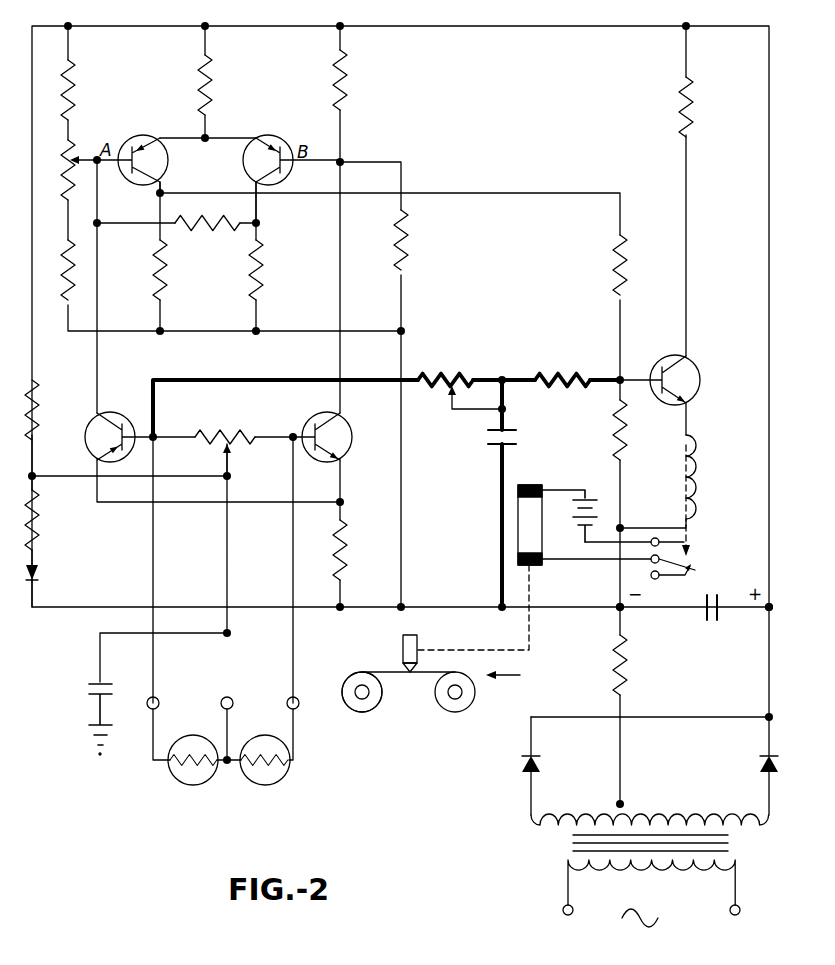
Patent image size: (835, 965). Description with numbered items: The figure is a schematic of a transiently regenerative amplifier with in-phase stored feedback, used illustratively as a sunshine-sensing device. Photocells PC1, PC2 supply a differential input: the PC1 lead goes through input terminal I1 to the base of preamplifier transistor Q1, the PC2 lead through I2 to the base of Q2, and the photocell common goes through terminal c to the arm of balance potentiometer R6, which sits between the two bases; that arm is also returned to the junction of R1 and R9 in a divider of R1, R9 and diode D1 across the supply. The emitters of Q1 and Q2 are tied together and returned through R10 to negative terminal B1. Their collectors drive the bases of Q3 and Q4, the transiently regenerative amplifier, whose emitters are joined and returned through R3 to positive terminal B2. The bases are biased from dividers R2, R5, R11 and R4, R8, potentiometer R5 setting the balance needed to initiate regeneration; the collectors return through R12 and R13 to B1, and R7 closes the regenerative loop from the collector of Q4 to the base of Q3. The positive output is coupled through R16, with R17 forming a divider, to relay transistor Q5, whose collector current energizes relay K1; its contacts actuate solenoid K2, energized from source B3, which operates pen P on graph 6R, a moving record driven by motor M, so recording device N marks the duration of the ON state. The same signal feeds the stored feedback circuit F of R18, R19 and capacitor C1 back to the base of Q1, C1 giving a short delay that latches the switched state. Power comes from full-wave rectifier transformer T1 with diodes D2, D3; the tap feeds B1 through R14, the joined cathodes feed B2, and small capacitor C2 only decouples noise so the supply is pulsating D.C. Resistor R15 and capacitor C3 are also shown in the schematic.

The serial resistance R1 is at (38, 426).
The divider resistor R2 is at (76, 64).
The emitter resistor R3 is at (212, 60).
The divider resistor R4 is at (346, 58).
The potentiometer R5 is at (70, 142).
The balance potentiometer R6 is at (224, 434).
The regenerative loop resistor R7 is at (198, 226).
The divider resistor R8 is at (408, 222).
The serial resistance R9 is at (38, 524).
The emitter resistor R10 is at (347, 528).
The divider resistor R11 is at (66, 304).
The collector resistor R12 is at (167, 290).
The collector resistor R13 is at (263, 250).
The resistor R14 is at (628, 644).
The resistor R15 is at (680, 80).
The coupling resistor R16 is at (614, 244).
The divider resistor R17 is at (602, 429).
The feedback resistor R18 is at (582, 372).
The feedback resistor R19 is at (460, 374).
The preamplifier transistor Q1 is at (119, 427).
The preamplifier transistor Q2 is at (333, 432).
The regenerative amplifier transistor Q3 is at (146, 164).
The regenerative amplifier transistor Q4 is at (277, 179).
The relay transistor Q5 is at (670, 392).
The capacitor C1 is at (488, 434).
The capacitor C2 is at (708, 614).
The capacitor C3 is at (90, 687).
The diode D1 is at (40, 582).
The diode D2 is at (522, 768).
The diode D3 is at (758, 764).
The relay K1 is at (700, 444).
The solenoid K2 is at (536, 484).
The negative terminal B1 is at (602, 594).
The positive terminal B2 is at (782, 593).
The source B3 is at (600, 496).
The input terminal I1 is at (159, 698).
The input terminal I2 is at (299, 698).
The input terminal c is at (233, 698).
The photocell PC1 is at (176, 782).
The photocell PC2 is at (284, 782).
The full-wave rectifier transformer T1 is at (546, 879).
The graph 6R is at (376, 674).
The motor M is at (372, 702).
The pen P is at (418, 648).
The recording device N is at (513, 676).
The stored feedback circuit F is at (501, 370).